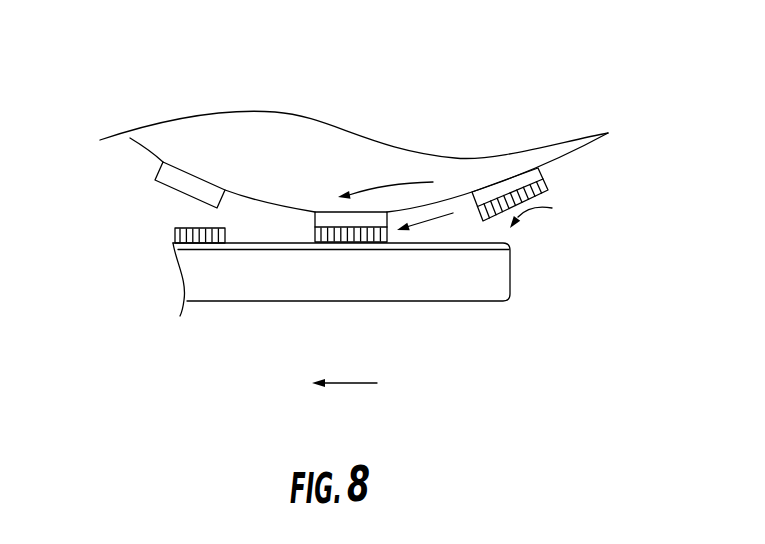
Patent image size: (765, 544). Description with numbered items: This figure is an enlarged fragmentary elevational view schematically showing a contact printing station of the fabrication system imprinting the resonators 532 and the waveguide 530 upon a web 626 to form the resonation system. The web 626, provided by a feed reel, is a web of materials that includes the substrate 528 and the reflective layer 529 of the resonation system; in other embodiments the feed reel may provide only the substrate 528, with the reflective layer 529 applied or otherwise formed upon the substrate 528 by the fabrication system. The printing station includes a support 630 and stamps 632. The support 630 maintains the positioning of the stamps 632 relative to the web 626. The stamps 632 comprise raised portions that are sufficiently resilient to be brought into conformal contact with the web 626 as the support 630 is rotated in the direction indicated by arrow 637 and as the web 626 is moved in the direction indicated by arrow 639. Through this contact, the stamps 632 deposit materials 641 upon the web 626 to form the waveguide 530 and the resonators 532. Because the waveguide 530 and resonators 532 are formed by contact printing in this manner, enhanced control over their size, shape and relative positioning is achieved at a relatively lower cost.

The support 630 is at (569, 162).
The stamps 632 is at (160, 170).
The materials 641 is at (333, 228).
The arrow 637 is at (383, 212).
The waveguide 530 is at (313, 236).
The resonators 532 is at (192, 227).
The reflective layer 529 is at (505, 242).
The web 626 is at (525, 272).
The substrate 528 is at (417, 290).
The arrow 639 is at (352, 383).